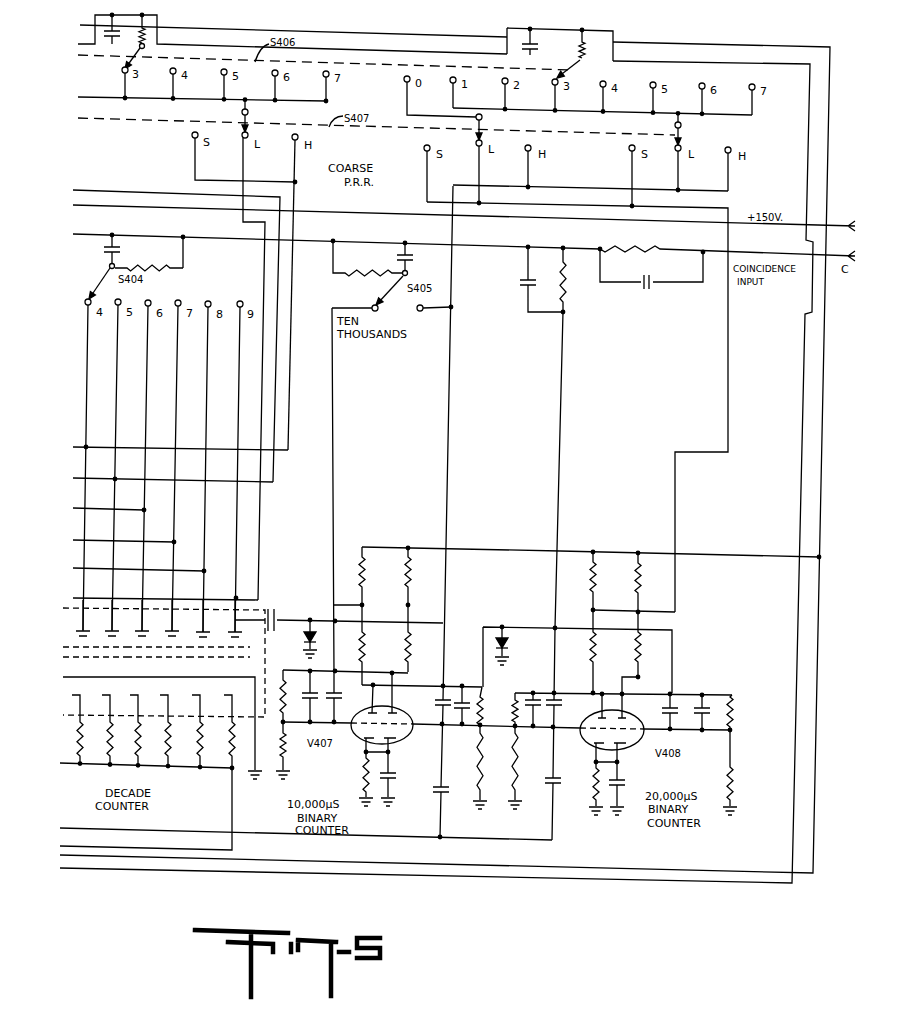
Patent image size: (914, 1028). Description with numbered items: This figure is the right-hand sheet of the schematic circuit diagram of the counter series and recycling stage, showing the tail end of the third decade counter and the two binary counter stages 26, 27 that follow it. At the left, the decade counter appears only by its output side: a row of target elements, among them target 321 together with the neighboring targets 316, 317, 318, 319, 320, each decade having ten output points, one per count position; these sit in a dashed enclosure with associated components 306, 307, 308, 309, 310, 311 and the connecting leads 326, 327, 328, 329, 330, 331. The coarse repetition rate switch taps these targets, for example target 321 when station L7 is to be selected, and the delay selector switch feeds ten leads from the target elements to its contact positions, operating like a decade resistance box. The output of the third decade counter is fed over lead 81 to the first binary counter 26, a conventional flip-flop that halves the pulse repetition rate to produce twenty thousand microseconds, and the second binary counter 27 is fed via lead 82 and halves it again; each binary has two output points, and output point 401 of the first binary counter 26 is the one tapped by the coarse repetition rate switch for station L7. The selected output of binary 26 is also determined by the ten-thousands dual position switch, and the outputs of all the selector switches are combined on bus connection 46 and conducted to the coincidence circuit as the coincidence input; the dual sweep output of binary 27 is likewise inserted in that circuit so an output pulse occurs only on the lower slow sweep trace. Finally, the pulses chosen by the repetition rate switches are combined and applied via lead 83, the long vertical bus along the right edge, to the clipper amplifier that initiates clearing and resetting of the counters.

The first binary counter 26 is at (400, 547).
The second binary counter 27 is at (638, 552).
The bus connection 46 is at (352, 244).
The lead 81 is at (286, 621).
The lead 82 is at (504, 627).
The lead 83 is at (806, 379).
The output point 401 is at (404, 603).
The decade counter resistor 306 is at (69, 729).
The decade counter resistor 307 is at (99, 730).
The decade counter resistor 308 is at (128, 730).
The decade counter resistor 309 is at (158, 730).
The decade counter resistor 310 is at (190, 731).
The decade counter resistor 311 is at (222, 731).
The decade counter capacitor 316 is at (76, 618).
The decade counter capacitor 317 is at (104, 618).
The decade counter capacitor 318 is at (134, 618).
The decade counter capacitor 319 is at (164, 618).
The decade counter capacitor 320 is at (195, 618).
The target 321 is at (226, 618).
The decade counter lead 326 is at (86, 662).
The decade counter lead 327 is at (104, 645).
The decade counter lead 328 is at (152, 662).
The decade counter lead 329 is at (170, 645).
The decade counter lead 330 is at (218, 662).
The decade counter lead 331 is at (226, 645).